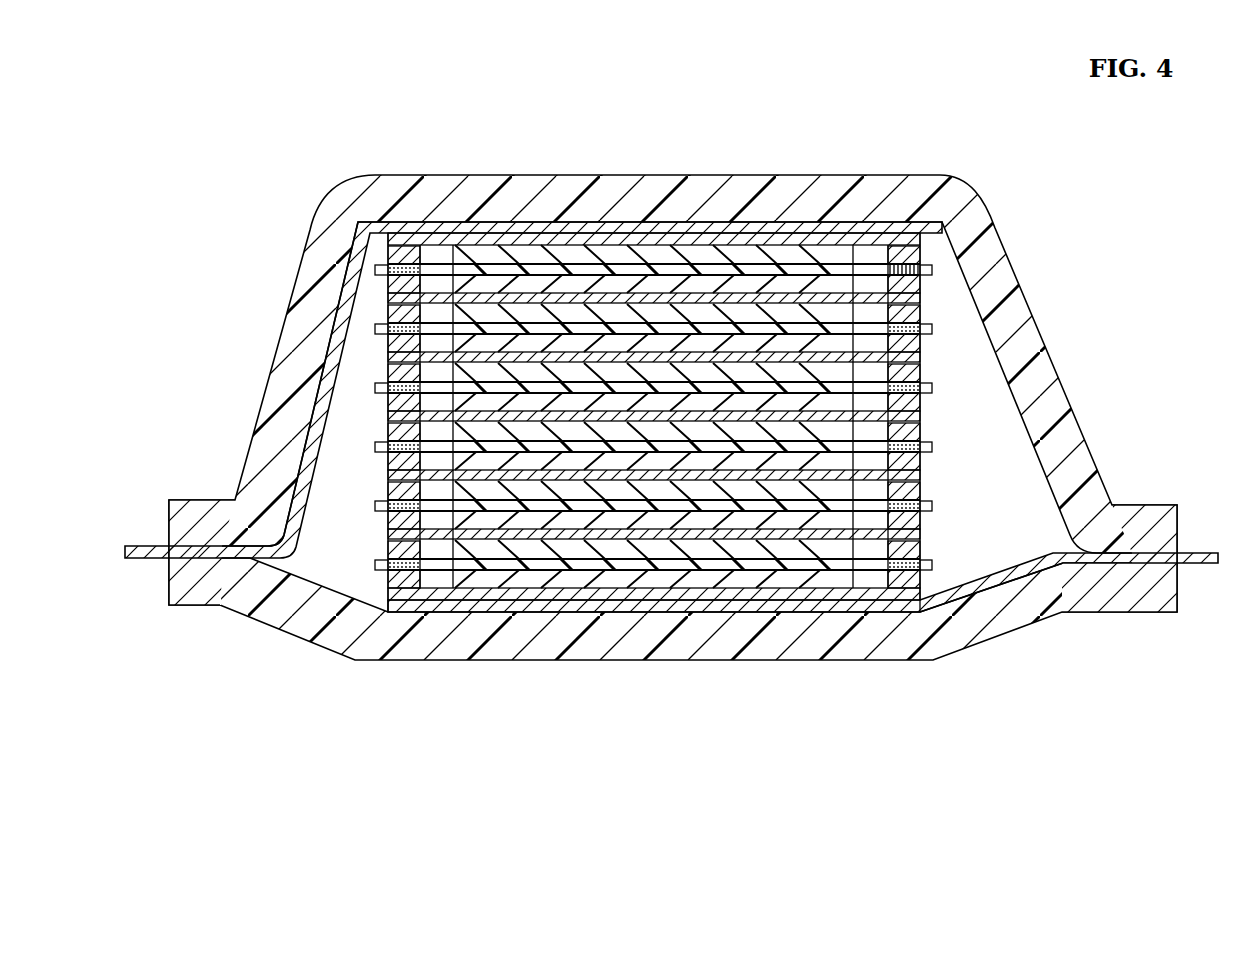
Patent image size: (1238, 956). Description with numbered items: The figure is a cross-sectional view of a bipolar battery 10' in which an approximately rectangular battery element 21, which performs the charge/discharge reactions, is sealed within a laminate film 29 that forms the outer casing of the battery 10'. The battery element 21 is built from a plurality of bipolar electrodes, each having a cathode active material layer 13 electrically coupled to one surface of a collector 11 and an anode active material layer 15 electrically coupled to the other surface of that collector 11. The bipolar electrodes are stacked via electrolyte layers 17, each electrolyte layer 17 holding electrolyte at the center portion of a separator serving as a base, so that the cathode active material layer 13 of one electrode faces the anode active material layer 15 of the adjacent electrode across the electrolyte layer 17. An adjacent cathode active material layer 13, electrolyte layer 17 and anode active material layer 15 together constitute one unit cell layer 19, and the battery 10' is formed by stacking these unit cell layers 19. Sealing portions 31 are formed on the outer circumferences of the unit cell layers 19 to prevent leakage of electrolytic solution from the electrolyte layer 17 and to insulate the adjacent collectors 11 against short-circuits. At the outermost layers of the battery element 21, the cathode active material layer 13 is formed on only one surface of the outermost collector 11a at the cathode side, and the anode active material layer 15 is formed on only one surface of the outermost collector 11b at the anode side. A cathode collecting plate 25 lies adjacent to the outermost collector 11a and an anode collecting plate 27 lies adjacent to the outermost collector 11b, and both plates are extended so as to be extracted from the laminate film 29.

The bipolar battery 10' is at (662, 375).
The collector 11 is at (705, 288).
The outermost collector at the cathode side 11a is at (770, 240).
The outermost collector at the anode side 11b is at (802, 595).
The cathode active material layer 13 is at (636, 300).
The anode active material layer 15 is at (525, 338).
The electrolyte layer 17 is at (584, 326).
The unit cell layer 19 is at (507, 112).
The battery element 21 is at (956, 480).
The cathode collecting plate 25 is at (153, 546).
The anode collecting plate 27 is at (1195, 553).
The laminate film 29 is at (1160, 505).
The sealing portion 31 is at (912, 278).